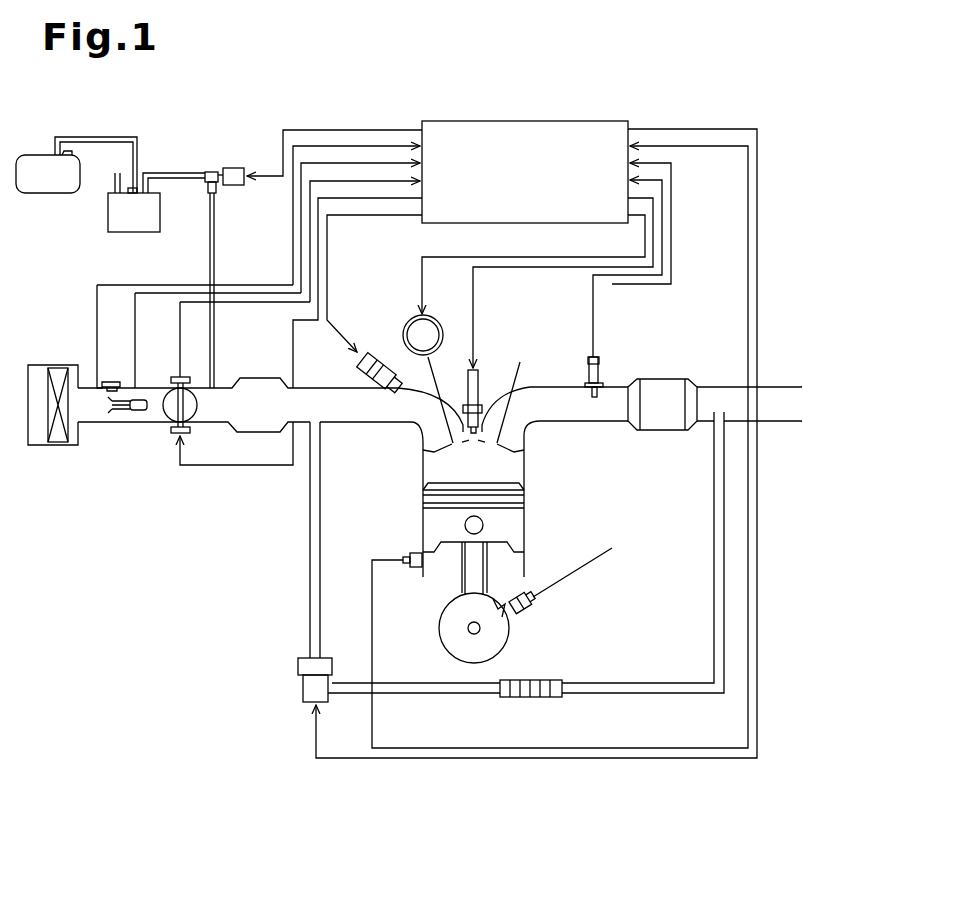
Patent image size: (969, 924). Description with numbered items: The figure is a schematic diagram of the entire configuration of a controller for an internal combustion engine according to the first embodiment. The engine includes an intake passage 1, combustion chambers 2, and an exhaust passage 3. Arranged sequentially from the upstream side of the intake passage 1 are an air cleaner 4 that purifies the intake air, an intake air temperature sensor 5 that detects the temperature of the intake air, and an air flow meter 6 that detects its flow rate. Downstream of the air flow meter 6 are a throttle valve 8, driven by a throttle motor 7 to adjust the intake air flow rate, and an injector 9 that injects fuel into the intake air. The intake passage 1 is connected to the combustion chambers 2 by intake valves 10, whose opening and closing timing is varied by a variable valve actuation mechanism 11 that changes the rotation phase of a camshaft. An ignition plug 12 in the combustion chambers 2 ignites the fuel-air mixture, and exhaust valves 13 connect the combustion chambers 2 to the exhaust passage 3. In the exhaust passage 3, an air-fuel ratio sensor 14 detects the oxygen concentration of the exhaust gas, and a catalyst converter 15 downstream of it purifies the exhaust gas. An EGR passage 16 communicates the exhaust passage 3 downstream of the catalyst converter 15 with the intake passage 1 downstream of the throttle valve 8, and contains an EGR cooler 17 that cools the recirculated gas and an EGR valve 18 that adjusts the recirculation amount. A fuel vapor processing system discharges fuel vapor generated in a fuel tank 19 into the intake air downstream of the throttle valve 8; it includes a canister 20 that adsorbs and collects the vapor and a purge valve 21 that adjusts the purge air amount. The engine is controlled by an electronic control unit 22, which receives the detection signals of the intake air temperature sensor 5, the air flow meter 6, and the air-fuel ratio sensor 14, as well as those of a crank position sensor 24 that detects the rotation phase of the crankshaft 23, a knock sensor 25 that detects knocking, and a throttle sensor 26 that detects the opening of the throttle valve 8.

The intake passage 1 is at (334, 424).
The combustion chambers 2 is at (481, 474).
The exhaust passage 3 is at (585, 423).
The air cleaner 4 is at (57, 442).
The intake air temperature sensor 5 is at (112, 380).
The air flow meter 6 is at (136, 412).
The throttle motor 7 is at (174, 434).
The throttle valve 8 is at (192, 402).
The injector 9 is at (356, 366).
The intake valves 10 is at (438, 406).
The variable valve actuation mechanism 11 is at (404, 334).
The ignition plug 12 is at (480, 380).
The exhaust valves 13 is at (508, 406).
The air-fuel ratio sensor 14 is at (588, 373).
The catalyst converter 15 is at (662, 431).
The EGR passage 16 is at (628, 682).
The EGR cooler 17 is at (535, 698).
The EGR valve 18 is at (302, 684).
The fuel tank 19 is at (43, 194).
The canister 20 is at (142, 233).
The purge valve 21 is at (236, 187).
The electronic control unit 22 is at (462, 119).
The crankshaft 23 is at (468, 632).
The crank position sensor 24 is at (523, 611).
The knock sensor 25 is at (415, 568).
The throttle sensor 26 is at (182, 376).